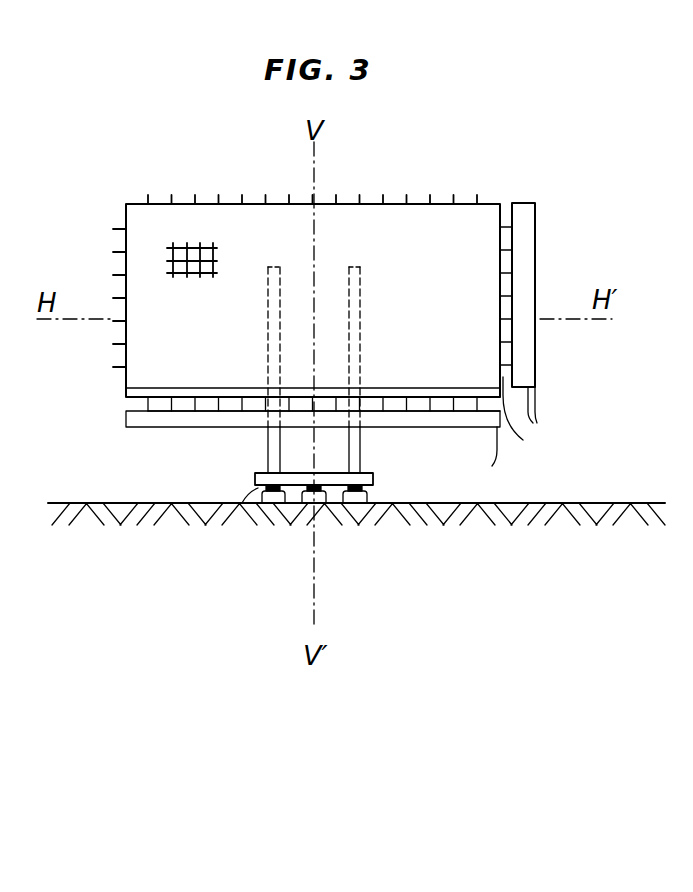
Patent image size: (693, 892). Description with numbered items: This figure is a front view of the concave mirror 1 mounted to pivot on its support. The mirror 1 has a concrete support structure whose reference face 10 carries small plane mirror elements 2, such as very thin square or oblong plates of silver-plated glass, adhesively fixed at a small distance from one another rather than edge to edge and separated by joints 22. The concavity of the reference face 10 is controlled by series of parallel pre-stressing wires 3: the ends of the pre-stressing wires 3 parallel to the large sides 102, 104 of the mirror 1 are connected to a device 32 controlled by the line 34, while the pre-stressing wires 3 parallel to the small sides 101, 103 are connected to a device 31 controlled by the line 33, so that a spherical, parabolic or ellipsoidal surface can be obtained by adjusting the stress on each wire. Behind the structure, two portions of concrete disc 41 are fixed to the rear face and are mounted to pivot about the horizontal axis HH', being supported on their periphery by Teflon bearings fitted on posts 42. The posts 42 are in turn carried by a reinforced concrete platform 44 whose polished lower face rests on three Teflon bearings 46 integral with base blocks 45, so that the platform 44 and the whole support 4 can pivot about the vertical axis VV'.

The concave mirror 1 is at (319, 321).
The reference face 10 is at (137, 236).
The small side 101 is at (120, 330).
The large side 102 is at (395, 200).
The small side 103 is at (538, 420).
The large side 104 is at (147, 387).
The plane mirror elements 2 is at (195, 265).
The joints 22 is at (190, 275).
The pre-stressing wires 3 is at (503, 243).
The device 31 is at (488, 427).
The device 32 is at (533, 282).
The line 33 is at (500, 452).
The line 34 is at (535, 402).
The stand 4 is at (316, 398).
The concrete disc portions 41 is at (348, 273).
The posts 42 is at (315, 351).
The platform 44 is at (373, 480).
The base blocks 45 is at (276, 498).
The bearings 46 is at (242, 503).